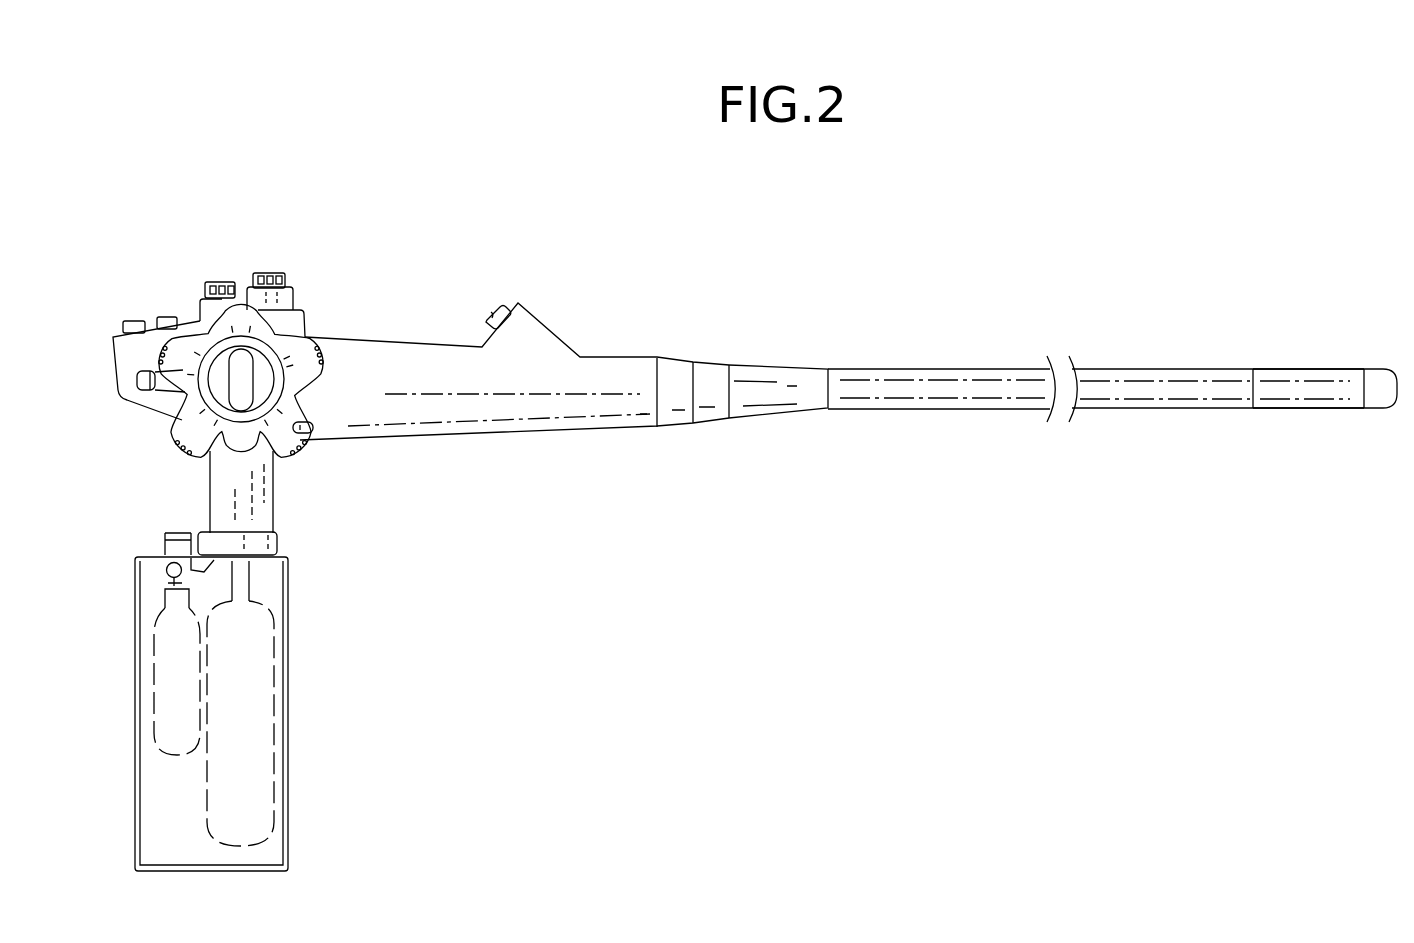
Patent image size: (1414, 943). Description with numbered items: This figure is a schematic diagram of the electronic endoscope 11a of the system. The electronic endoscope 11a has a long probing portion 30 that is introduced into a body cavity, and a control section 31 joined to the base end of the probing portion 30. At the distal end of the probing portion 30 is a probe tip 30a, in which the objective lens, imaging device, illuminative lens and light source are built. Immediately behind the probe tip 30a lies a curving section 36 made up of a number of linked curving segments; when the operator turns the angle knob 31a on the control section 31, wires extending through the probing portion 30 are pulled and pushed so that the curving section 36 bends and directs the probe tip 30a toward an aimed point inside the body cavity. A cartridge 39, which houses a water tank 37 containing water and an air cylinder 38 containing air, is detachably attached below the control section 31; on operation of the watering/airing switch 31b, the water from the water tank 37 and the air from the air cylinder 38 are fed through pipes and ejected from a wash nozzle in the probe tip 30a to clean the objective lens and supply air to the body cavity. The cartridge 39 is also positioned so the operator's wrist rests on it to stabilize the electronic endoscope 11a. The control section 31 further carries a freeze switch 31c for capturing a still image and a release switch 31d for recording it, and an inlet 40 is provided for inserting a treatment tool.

The electronic endoscope 11a is at (732, 440).
The probing portion 30 is at (952, 368).
The probe tip 30a is at (1377, 403).
The control section 31 is at (317, 422).
The angle knob 31a is at (298, 347).
The watering/airing switch 31b is at (227, 283).
The freeze switch 31c is at (163, 318).
The release switch 31d is at (132, 323).
The curving section 36 is at (1307, 409).
The water tank 37 is at (274, 717).
The air cylinder 38 is at (154, 681).
The cartridge 39 is at (288, 850).
The inlet 40 is at (488, 306).